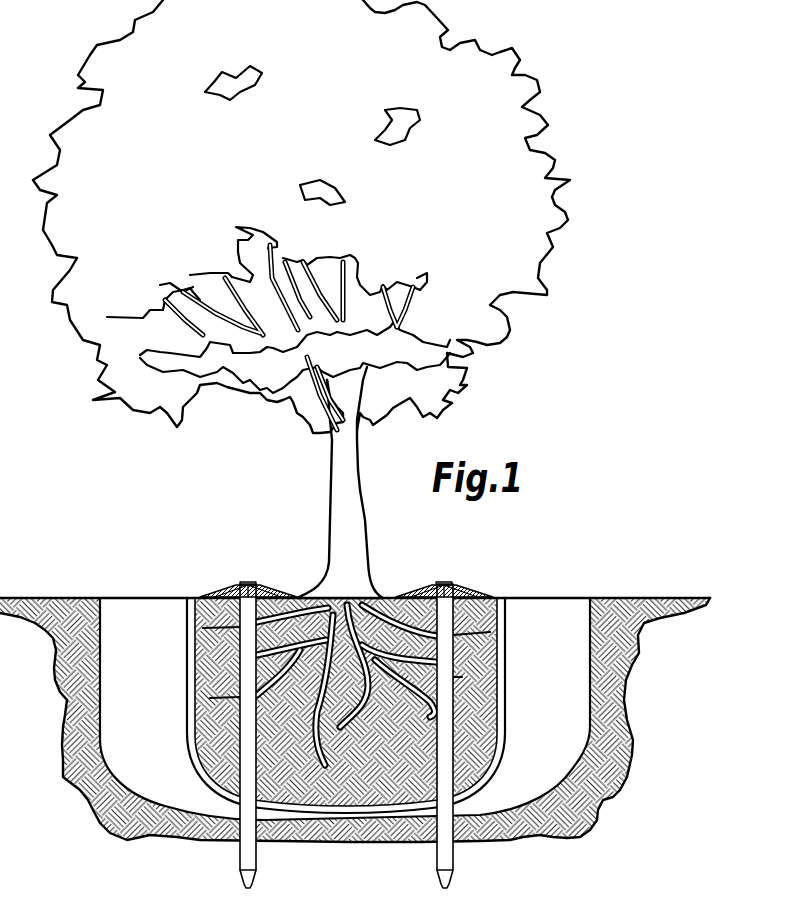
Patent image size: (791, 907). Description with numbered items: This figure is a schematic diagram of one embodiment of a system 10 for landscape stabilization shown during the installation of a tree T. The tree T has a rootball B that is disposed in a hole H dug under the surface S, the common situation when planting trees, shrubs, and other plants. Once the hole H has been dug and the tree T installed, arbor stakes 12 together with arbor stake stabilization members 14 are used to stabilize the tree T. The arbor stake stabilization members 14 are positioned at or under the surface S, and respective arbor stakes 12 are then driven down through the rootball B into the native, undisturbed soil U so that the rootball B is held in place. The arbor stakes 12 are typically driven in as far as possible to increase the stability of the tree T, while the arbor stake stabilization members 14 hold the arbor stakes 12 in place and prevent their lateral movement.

The system for landscape stabilization 10 is at (538, 346).
The arbor stake 12 is at (240, 856).
The arbor stake stabilization member 14 is at (213, 587).
The tree T is at (339, 482).
The surface S is at (613, 597).
The hole H is at (508, 625).
The native, undisturbed soil U is at (632, 750).
The rootball B is at (480, 775).